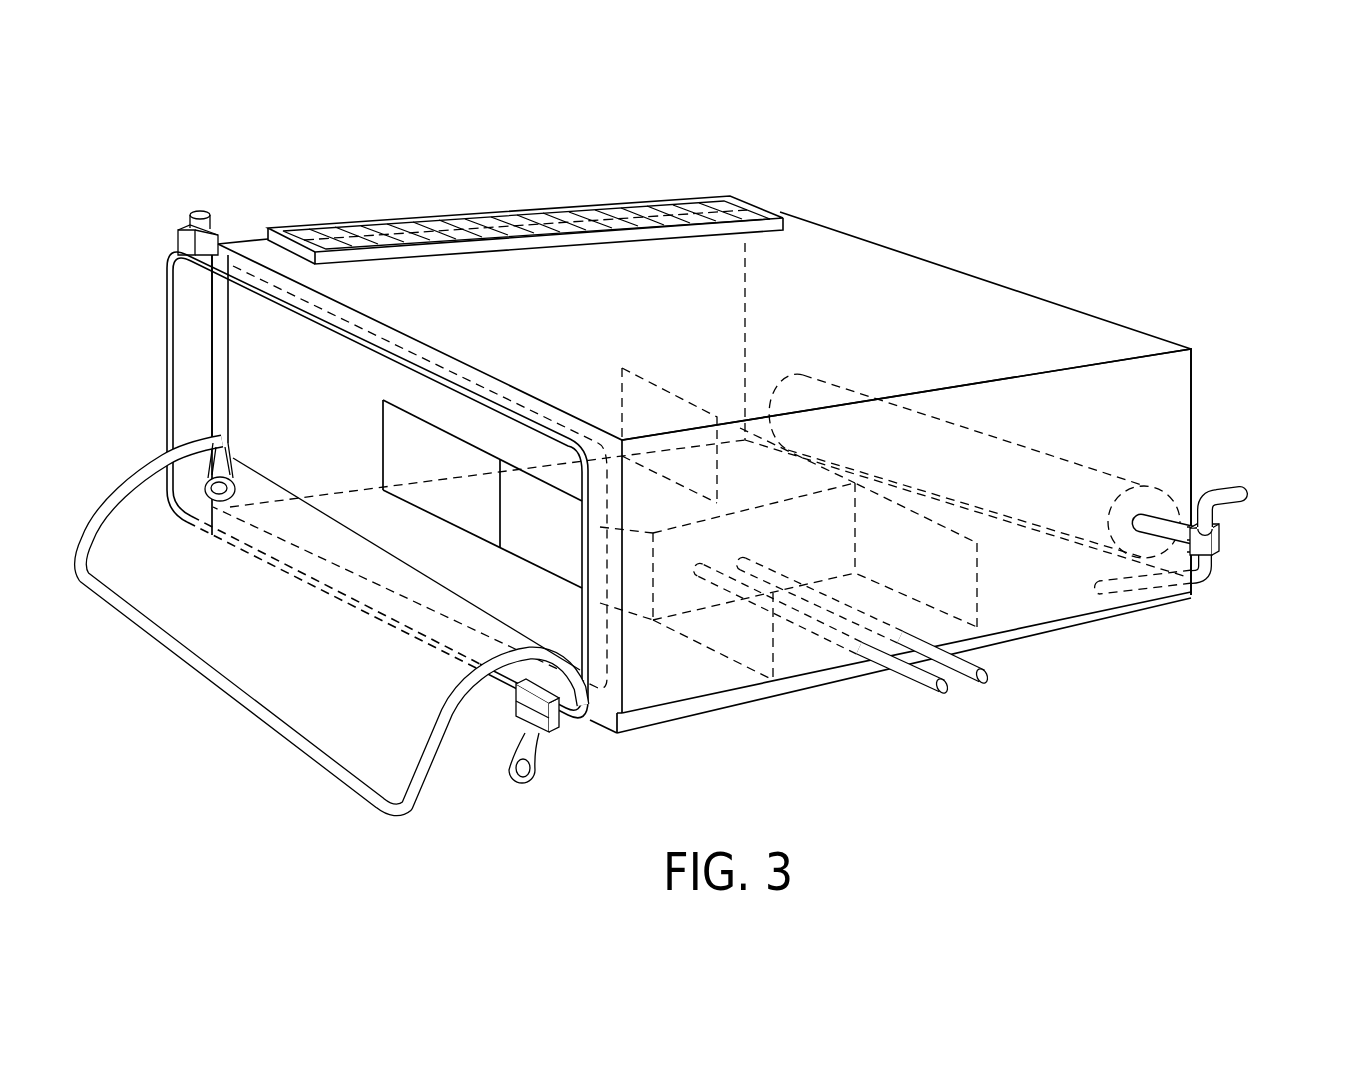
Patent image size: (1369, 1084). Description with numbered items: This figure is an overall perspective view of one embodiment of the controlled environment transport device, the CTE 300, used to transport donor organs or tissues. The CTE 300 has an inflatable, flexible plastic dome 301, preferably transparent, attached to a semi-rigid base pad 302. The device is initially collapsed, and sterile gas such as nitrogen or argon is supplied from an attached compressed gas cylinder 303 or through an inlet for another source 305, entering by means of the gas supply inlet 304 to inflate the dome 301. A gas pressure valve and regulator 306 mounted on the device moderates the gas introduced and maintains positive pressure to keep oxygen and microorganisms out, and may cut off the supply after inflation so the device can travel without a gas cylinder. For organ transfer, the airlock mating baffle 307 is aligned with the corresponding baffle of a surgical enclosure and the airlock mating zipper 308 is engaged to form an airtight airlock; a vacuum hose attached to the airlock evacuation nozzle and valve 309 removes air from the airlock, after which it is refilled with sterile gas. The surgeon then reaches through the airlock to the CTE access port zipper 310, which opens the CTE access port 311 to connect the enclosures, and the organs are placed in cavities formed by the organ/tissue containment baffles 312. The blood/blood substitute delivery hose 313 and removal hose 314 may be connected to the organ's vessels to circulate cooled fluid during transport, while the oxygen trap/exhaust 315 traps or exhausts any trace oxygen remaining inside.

The CTE 300 is at (940, 292).
The inflatable, flexible plastic dome 301 is at (1185, 418).
The semi-rigid base pad 302 is at (735, 695).
The compressed gas cylinder 303 is at (1022, 442).
The gas supply inlet 304 is at (1147, 592).
The inlet for another source 305 is at (1250, 495).
The gas pressure valve and regulator 306 is at (1220, 542).
The airlock mating baffle 307 is at (185, 331).
The airlock mating zipper 308 is at (536, 750).
The airlock evacuation nozzle and valve 309 is at (200, 211).
The CTE access port zipper 310 is at (213, 472).
The CTE access port 311 is at (230, 663).
The organ/tissue containment baffles 312 is at (383, 440).
The blood/blood substitute delivery hose 313 is at (939, 694).
The blood/blood substitute removal hose 314 is at (982, 684).
The oxygen trap/exhaust 315 is at (607, 205).